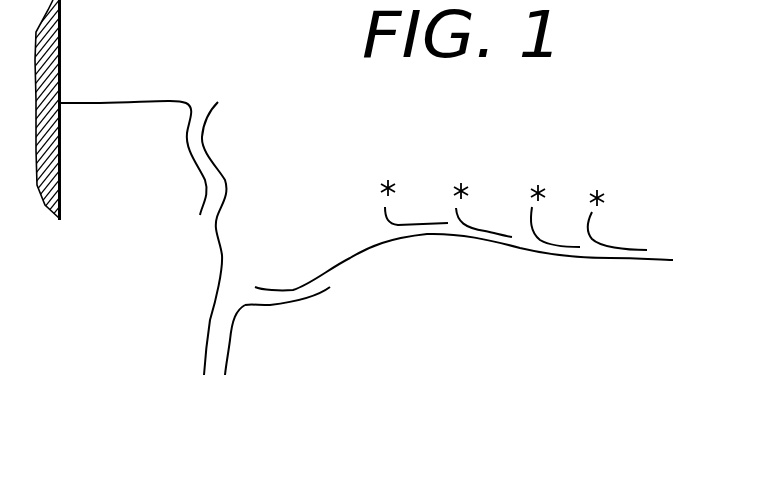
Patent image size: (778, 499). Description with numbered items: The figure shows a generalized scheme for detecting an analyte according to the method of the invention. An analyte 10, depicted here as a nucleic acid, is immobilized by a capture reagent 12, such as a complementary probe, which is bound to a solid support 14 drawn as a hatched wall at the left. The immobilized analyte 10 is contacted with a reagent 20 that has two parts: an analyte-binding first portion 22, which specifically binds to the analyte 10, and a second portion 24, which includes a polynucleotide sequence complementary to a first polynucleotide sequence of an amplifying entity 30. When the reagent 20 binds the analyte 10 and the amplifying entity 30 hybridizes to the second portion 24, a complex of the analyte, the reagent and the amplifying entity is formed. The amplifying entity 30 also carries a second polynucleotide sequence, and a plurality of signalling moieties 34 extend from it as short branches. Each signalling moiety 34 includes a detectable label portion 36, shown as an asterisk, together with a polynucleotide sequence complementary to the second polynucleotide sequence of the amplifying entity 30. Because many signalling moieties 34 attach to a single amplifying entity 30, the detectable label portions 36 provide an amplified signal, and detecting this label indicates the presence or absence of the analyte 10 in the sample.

The analyte 10 is at (212, 273).
The capture reagent 12 is at (138, 90).
The solid support 14 is at (60, 29).
The reagent 20 is at (382, 335).
The analyte-binding first portion 22 is at (235, 343).
The second portion 24 is at (310, 305).
The amplifying entity 30 is at (626, 270).
The signalling moieties 34 is at (418, 211).
The detectable label portion 36 is at (378, 186).